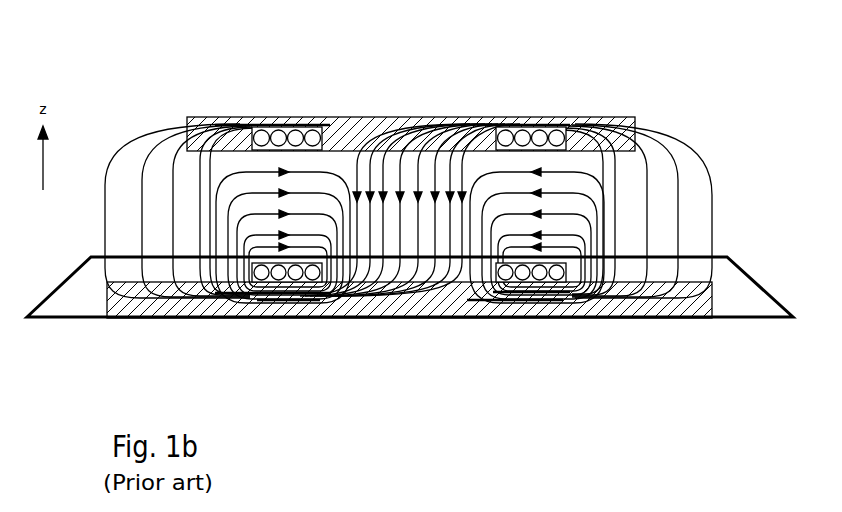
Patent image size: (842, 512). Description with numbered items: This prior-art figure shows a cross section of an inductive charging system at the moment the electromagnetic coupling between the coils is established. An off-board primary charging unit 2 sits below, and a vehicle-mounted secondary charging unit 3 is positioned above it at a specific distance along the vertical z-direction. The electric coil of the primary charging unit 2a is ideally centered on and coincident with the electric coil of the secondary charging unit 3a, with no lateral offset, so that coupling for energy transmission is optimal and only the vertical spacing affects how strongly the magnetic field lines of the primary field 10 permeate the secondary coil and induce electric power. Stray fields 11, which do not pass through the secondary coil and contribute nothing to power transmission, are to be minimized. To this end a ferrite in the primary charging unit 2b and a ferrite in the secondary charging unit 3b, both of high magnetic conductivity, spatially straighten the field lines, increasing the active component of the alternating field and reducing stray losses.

The primary charging unit 2 is at (727, 257).
The electric coil of the primary charging unit 2a is at (296, 318).
The ferrite in the primary charging unit 2b is at (690, 318).
The secondary charging unit 3 is at (414, 94).
The electric coil of the secondary charging unit 3a is at (285, 117).
The ferrite in the secondary charging unit 3b is at (624, 122).
The magnetic field lines of the primary field 10 is at (409, 200).
The stray fields 11 is at (263, 208).